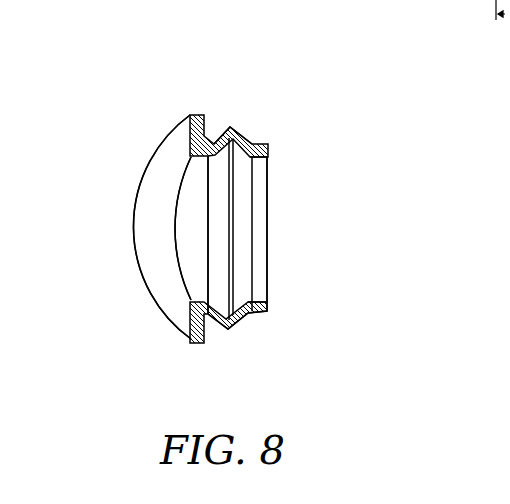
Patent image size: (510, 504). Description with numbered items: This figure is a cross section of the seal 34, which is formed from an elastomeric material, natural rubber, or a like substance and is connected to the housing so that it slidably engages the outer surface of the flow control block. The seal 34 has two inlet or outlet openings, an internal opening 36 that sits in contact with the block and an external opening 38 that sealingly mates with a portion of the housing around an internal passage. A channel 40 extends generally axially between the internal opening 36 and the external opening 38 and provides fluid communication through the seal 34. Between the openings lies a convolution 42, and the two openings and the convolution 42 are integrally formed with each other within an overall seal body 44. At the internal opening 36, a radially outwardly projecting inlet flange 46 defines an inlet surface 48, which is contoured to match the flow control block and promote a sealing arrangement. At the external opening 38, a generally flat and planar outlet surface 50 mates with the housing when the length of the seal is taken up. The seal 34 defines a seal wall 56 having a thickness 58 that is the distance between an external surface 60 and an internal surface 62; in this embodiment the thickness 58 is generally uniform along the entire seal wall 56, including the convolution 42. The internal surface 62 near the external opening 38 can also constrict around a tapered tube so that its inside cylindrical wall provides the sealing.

The seal 34 is at (203, 113).
The internal opening 36 is at (109, 248).
The external opening 38 is at (282, 232).
The channel 40 is at (192, 217).
The convolution 42 is at (228, 329).
The seal body 44 is at (190, 338).
The inlet flange 46 is at (162, 292).
The inlet surface 48 is at (167, 157).
The outlet surface 50 is at (268, 272).
The seal wall 56 is at (268, 303).
The thickness 58 is at (272, 143).
The external surface 60 is at (230, 127).
The internal surface 62 is at (246, 160).